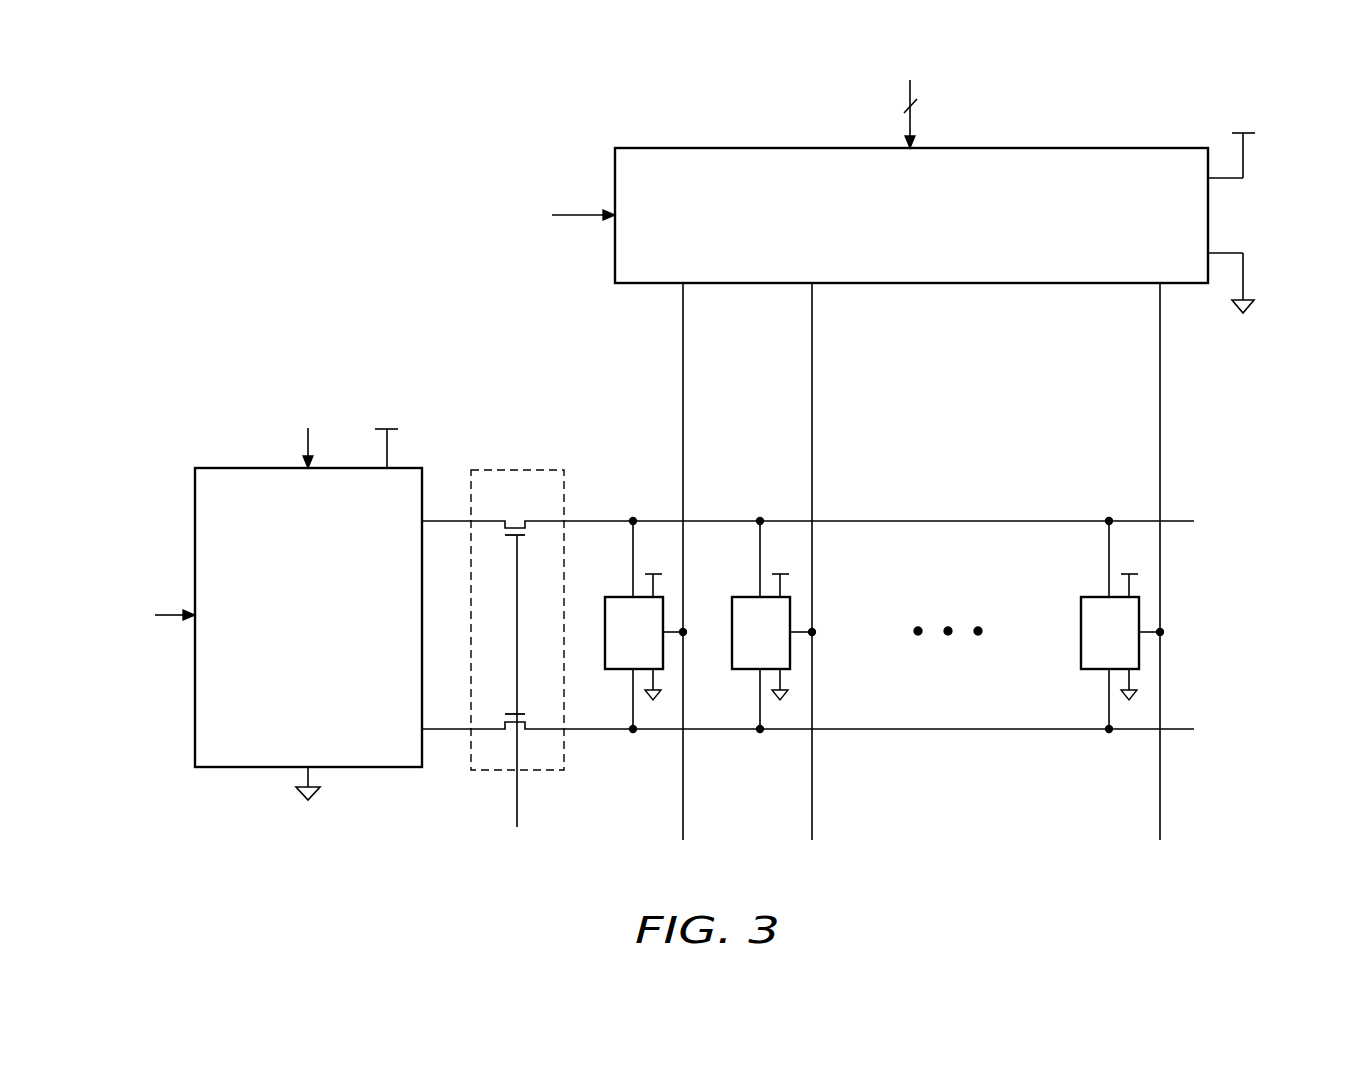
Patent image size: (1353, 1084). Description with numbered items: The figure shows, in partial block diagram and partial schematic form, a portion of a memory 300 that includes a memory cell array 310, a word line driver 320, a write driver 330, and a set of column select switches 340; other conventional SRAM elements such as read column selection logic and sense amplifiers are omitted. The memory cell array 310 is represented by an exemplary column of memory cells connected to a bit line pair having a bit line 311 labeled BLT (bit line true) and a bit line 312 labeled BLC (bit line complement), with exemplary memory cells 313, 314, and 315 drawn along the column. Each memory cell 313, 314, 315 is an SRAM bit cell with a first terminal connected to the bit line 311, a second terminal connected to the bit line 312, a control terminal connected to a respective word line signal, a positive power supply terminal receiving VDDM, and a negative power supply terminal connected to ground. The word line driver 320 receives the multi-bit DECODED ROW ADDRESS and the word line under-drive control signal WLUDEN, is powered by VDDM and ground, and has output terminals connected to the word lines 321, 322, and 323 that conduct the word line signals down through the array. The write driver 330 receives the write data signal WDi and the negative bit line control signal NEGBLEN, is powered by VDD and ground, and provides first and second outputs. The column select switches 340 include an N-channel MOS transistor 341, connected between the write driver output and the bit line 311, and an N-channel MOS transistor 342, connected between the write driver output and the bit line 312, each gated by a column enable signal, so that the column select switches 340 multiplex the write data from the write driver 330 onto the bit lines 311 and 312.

The memory 300 is at (232, 259).
The memory cell array 310 is at (861, 625).
The bit line 311 is at (903, 521).
The bit line 312 is at (903, 729).
The memory cell 313 is at (613, 596).
The memory cell 314 is at (742, 596).
The memory cell 315 is at (1090, 596).
The word line driver 320 is at (742, 147).
The word line WL0 321 is at (683, 372).
The word line WL1 322 is at (812, 372).
The word line WLN-1 323 is at (1160, 372).
The write driver 330 is at (223, 468).
The column select switches 340 is at (517, 626).
The transistor 341 is at (527, 529).
The transistor 342 is at (527, 722).